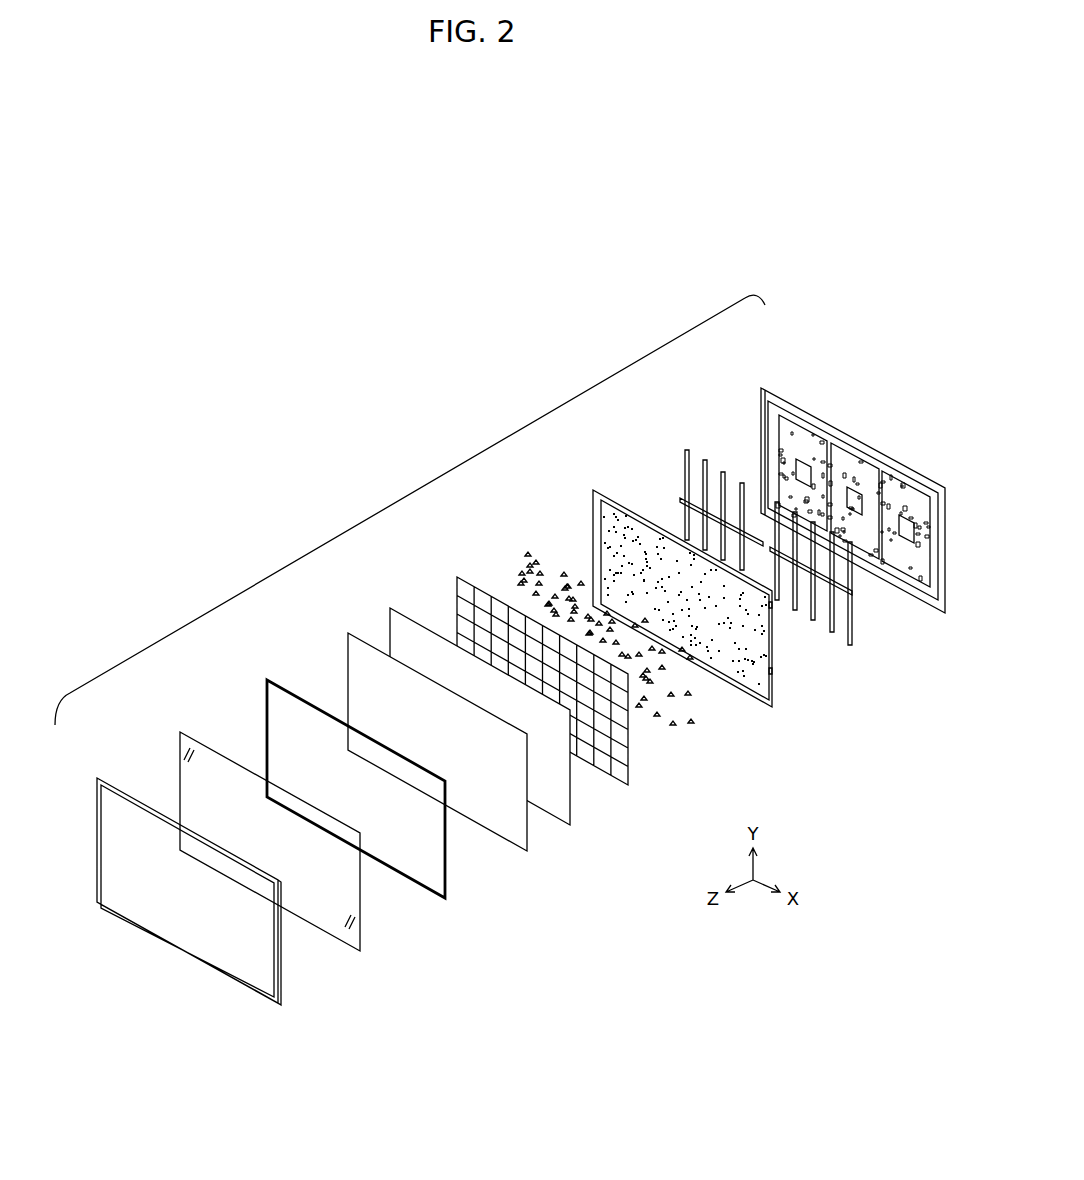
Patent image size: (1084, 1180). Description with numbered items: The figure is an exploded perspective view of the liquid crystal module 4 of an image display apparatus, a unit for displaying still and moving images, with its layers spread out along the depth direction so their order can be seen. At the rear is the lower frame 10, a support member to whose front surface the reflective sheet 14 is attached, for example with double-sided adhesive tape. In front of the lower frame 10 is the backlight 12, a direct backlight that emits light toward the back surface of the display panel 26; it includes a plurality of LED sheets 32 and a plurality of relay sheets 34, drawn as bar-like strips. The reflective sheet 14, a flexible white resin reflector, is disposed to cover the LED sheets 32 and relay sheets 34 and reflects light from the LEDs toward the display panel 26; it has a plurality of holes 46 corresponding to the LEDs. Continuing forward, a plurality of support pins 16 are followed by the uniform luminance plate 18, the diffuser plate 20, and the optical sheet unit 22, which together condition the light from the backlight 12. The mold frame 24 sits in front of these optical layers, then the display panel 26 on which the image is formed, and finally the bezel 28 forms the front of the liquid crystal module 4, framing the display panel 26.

The liquid crystal module 4 is at (398, 499).
The lower frame 10 is at (762, 388).
The backlight 12 is at (750, 495).
The reflective sheet 14 is at (602, 490).
The support pins 16 is at (534, 552).
The uniform luminance plate 18 is at (458, 577).
The diffuser plate 20 is at (393, 607).
The optical sheet unit 22 is at (356, 632).
The mold frame 24 is at (277, 678).
The display panel 26 is at (192, 732).
The bezel 28 is at (108, 783).
The LED sheets 32 is at (687, 450).
The relay sheets 34 is at (725, 474).
The holes 46 is at (772, 604).